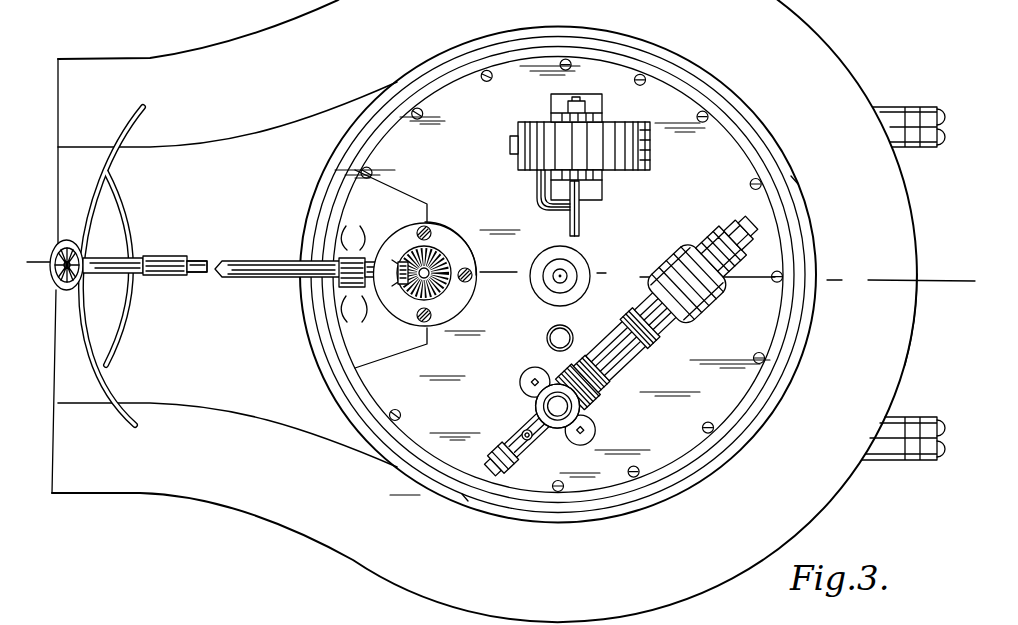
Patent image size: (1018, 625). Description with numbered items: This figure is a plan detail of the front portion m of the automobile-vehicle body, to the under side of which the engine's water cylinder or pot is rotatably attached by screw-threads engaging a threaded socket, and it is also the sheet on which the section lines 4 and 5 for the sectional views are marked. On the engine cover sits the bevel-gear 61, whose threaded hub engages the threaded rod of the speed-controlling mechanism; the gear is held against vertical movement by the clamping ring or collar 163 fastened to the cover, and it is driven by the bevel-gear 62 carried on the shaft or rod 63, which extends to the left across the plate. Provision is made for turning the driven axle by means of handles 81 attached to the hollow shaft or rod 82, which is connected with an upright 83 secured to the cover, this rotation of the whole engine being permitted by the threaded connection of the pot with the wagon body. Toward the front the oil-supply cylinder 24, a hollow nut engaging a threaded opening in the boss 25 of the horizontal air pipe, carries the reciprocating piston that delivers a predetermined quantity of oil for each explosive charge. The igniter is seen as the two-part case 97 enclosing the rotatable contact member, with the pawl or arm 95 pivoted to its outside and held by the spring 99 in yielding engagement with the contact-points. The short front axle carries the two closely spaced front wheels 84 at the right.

The section line 4 is at (497, 274).
The section line 5 is at (813, 163).
The oil-supply cylinder 24 is at (545, 407).
The boss 25 is at (582, 413).
The bevel-gear 61 is at (444, 268).
The bevel-gear 62 is at (399, 284).
The shaft or rod 63 is at (201, 263).
The handles 81 is at (111, 154).
The hollow shaft or rod 82 is at (178, 275).
The upright 83 is at (345, 293).
The front wheels 84 is at (921, 424).
The pawl or arm 95 is at (517, 140).
The two-part case 97 is at (530, 162).
The spring 99 is at (510, 146).
The clamping ring or collar 163 is at (477, 250).
The front portion m is at (912, 356).